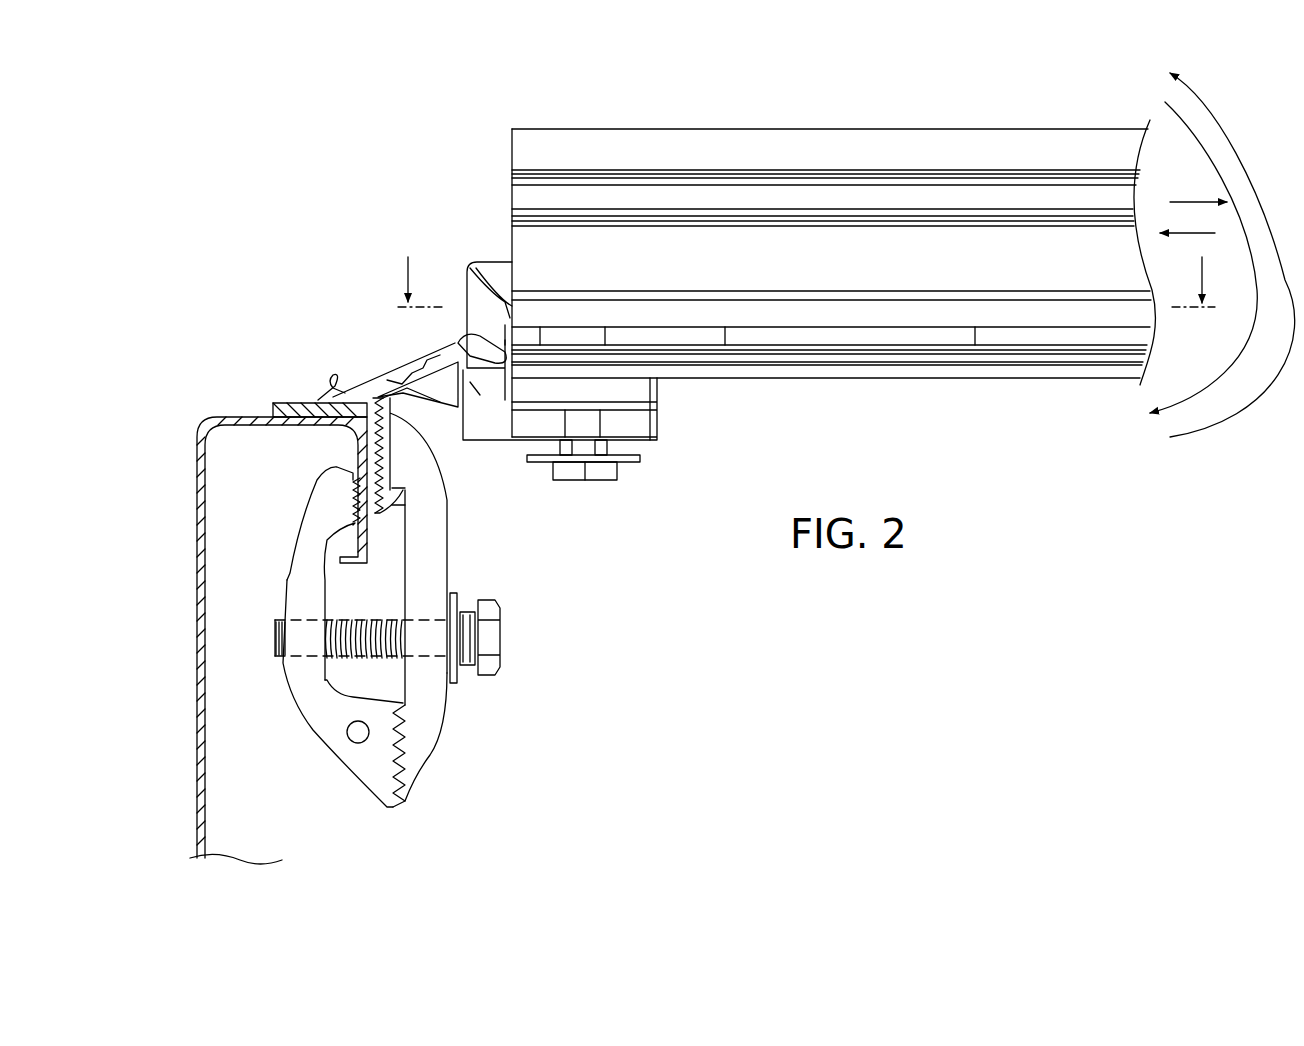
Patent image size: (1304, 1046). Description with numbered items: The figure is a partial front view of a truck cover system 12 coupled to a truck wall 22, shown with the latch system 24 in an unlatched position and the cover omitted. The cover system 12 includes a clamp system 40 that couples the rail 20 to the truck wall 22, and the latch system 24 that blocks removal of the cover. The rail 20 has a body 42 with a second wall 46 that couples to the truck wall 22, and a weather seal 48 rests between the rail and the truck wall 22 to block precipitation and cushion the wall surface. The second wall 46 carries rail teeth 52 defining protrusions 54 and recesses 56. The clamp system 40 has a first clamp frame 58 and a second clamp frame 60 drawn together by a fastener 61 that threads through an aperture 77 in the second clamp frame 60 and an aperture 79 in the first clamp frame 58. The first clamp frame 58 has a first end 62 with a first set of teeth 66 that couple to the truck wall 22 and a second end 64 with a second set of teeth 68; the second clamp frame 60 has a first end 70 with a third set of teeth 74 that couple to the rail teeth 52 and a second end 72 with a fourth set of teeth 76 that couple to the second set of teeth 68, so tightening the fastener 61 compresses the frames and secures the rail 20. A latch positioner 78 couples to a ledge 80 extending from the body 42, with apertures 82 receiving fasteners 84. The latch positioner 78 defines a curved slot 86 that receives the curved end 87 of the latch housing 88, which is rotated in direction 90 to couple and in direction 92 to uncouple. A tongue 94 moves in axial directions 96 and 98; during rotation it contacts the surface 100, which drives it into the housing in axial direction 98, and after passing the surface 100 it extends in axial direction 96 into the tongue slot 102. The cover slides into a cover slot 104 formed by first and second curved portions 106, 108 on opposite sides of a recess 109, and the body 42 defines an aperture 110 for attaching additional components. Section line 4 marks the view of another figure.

The truck cover system 12 is at (330, 188).
The rail 20 is at (245, 312).
The truck wall 22 is at (197, 628).
The latch system 24 is at (757, 447).
The clamp system 40 is at (505, 795).
The body 42 is at (363, 292).
The second wall 46 is at (377, 455).
The weather seal 48 is at (280, 402).
The rail teeth 52 is at (372, 532).
The protrusions 54 is at (392, 505).
The recesses 56 is at (392, 488).
The first clamp frame 58 is at (300, 803).
The second clamp frame 60 is at (560, 693).
The fastener 61 is at (500, 640).
The first end 62 is at (318, 510).
The second end 64 is at (360, 760).
The first set of teeth 66 is at (325, 530).
The second set of teeth 68 is at (378, 808).
The first end 70 is at (420, 478).
The second end 72 is at (430, 737).
The third set of teeth 74 is at (385, 425).
The fourth set of teeth 76 is at (438, 768).
The aperture 77 is at (420, 647).
The latch positioner 78 is at (660, 418).
The aperture 79 is at (308, 640).
The ledge 80 is at (645, 442).
The apertures 82 is at (565, 430).
The fasteners 84 is at (617, 473).
The curved slot 86 is at (650, 388).
The curved end 87 is at (1060, 380).
The latch housing 88 is at (592, 143).
The direction 90 is at (1185, 397).
The direction 92 is at (1205, 97).
The tongue 94 is at (490, 268).
The axial direction 96 is at (1195, 233).
The axial direction 98 is at (1195, 203).
The surface 100 is at (500, 300).
The tongue slot 102 is at (477, 383).
The cover slot 104 is at (398, 358).
The first curved portion 106 is at (340, 377).
The second curved portion 108 is at (510, 345).
The recess 109 is at (382, 374).
The aperture 110 is at (443, 390).
The section line 4 is at (806, 299).